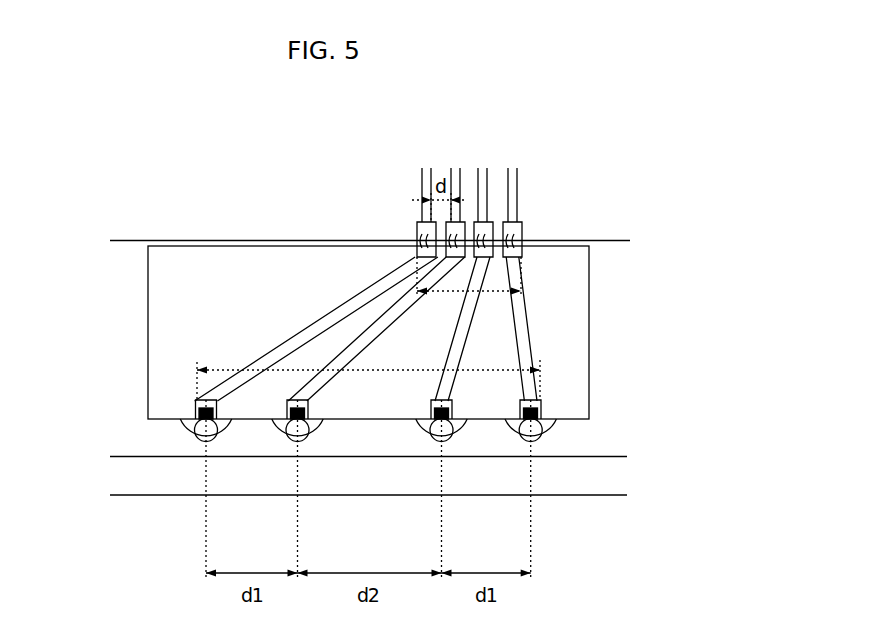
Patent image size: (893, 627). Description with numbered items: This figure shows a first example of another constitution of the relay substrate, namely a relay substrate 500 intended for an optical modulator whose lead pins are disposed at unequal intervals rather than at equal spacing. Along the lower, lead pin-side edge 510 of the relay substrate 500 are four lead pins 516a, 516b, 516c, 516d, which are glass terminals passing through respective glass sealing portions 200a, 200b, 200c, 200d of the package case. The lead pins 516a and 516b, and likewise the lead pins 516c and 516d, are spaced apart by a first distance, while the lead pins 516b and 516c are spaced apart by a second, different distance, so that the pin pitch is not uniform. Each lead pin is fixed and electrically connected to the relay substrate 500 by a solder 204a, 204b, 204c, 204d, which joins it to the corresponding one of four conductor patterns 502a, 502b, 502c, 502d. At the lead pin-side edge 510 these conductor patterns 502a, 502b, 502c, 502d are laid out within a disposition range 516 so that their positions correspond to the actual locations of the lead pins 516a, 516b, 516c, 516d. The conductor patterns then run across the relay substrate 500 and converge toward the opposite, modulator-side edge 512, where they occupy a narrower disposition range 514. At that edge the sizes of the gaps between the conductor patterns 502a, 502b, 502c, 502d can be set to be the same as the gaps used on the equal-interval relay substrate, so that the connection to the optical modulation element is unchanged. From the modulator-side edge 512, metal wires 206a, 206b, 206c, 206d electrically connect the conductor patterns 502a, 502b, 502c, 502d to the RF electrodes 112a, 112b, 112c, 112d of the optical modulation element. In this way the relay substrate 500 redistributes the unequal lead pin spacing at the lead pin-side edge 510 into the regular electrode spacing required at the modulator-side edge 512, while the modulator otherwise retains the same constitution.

The relay substrate 500 is at (167, 375).
The conductor pattern 502a is at (514, 273).
The conductor pattern 502b is at (463, 337).
The conductor pattern 502c is at (350, 350).
The conductor pattern 502d is at (350, 310).
The lead pin-side edge 510 is at (573, 420).
The modulator-side edge 512 is at (215, 242).
The disposition range 514 is at (430, 295).
The disposition range 516 is at (435, 368).
The lead pin 516a is at (537, 434).
The lead pin 516b is at (433, 436).
The lead pin 516c is at (294, 440).
The lead pin 516d is at (200, 428).
The RF electrode 112a is at (513, 180).
The RF electrode 112b is at (488, 178).
The RF electrode 112c is at (452, 178).
The RF electrode 112d is at (423, 180).
The metal wire 206a is at (520, 238).
The metal wire 206b is at (492, 234).
The metal wire 206c is at (450, 233).
The metal wire 206d is at (420, 236).
The solder 204a is at (533, 413).
The solder 204b is at (430, 404).
The solder 204c is at (305, 403).
The solder 204d is at (197, 411).
The glass sealing portion 200a is at (518, 448).
The glass sealing portion 200b is at (417, 450).
The glass sealing portion 200c is at (277, 438).
The glass sealing portion 200d is at (182, 433).